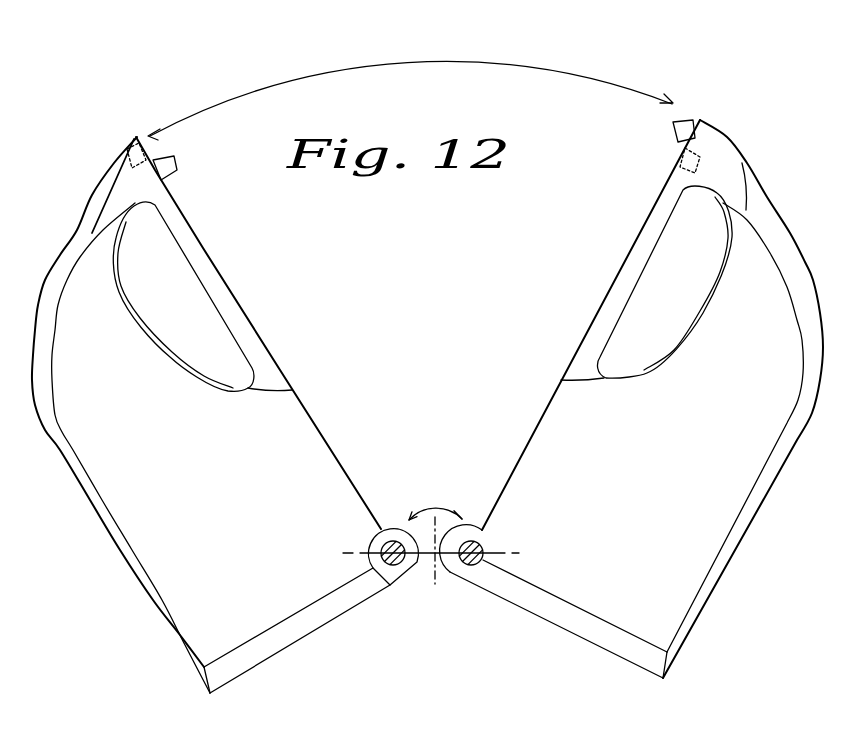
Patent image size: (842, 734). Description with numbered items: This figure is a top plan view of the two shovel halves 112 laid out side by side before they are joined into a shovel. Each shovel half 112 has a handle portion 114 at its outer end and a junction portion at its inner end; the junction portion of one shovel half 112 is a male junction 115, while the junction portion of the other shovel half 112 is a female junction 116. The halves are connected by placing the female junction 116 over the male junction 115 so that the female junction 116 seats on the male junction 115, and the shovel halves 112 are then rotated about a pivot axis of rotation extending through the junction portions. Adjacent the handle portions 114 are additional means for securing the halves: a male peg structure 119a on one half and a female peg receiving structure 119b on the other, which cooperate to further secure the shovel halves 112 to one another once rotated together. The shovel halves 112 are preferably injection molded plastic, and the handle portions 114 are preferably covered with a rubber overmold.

The shovel half 112 is at (288, 445).
The handle portion 114 is at (228, 297).
The male junction 115 is at (393, 530).
The female junction 116 is at (465, 568).
The male peg structure 119a is at (688, 134).
The female peg receiving structure 119b is at (135, 153).